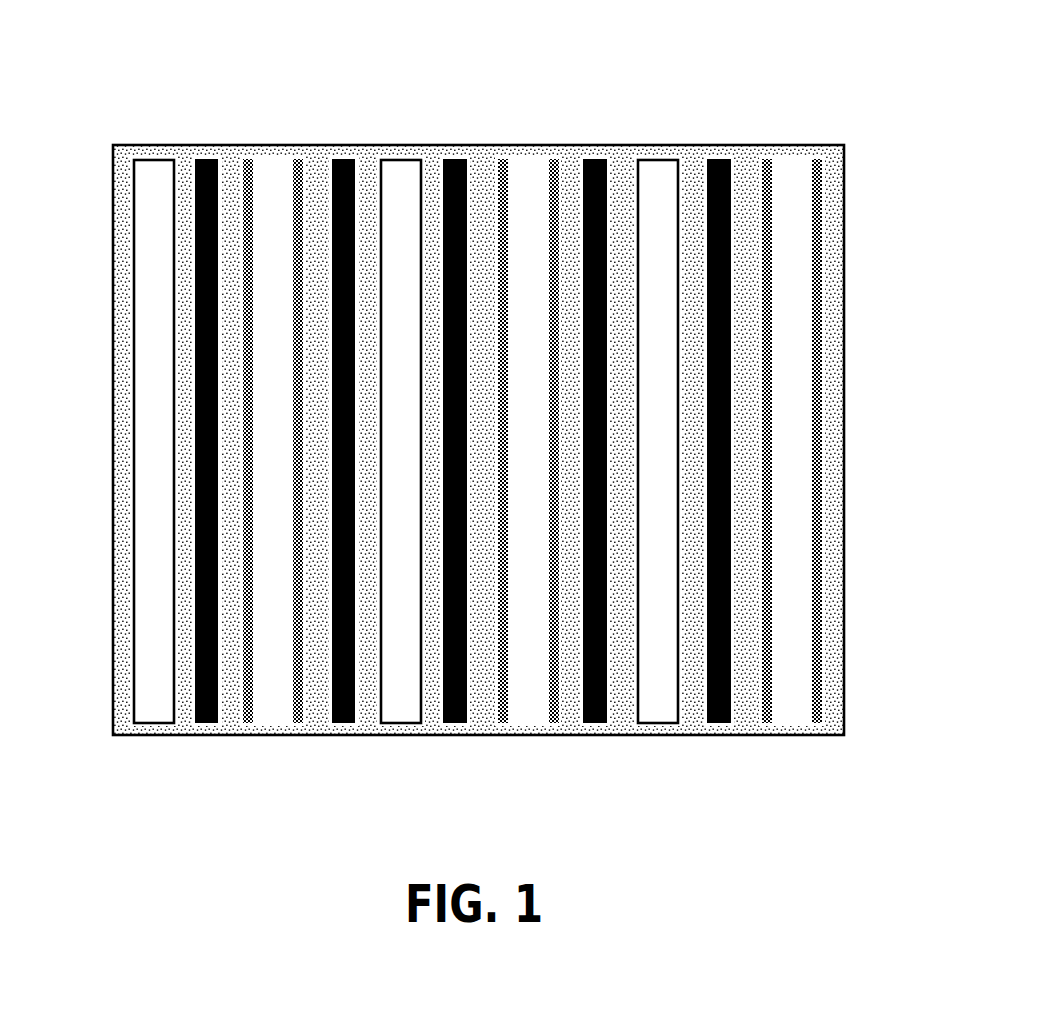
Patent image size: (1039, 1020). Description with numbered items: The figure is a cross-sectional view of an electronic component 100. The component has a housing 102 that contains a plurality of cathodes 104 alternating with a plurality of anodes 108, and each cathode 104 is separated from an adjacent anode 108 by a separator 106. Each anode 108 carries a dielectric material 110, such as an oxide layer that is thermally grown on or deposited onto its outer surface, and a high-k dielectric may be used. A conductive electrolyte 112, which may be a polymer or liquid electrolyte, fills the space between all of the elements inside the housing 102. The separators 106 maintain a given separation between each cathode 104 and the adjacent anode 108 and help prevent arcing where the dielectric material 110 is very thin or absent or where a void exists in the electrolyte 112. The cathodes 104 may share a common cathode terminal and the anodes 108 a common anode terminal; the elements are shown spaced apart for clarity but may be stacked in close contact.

The electronic component 100 is at (524, 34).
The housing 102 is at (847, 180).
The cathode 104 is at (150, 723).
The separator 106 is at (212, 723).
The anode 108 is at (503, 445).
The dielectric material 110 is at (245, 159).
The conductive electrolyte 112 is at (695, 166).